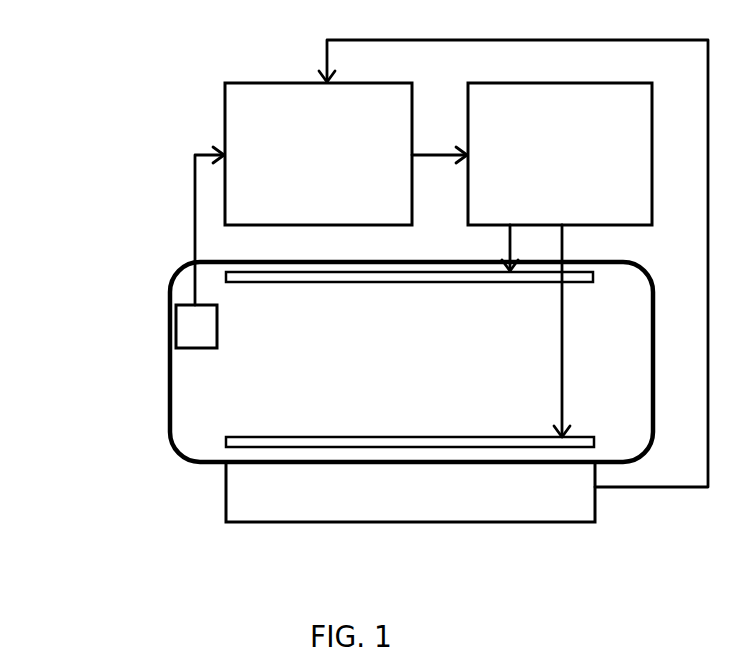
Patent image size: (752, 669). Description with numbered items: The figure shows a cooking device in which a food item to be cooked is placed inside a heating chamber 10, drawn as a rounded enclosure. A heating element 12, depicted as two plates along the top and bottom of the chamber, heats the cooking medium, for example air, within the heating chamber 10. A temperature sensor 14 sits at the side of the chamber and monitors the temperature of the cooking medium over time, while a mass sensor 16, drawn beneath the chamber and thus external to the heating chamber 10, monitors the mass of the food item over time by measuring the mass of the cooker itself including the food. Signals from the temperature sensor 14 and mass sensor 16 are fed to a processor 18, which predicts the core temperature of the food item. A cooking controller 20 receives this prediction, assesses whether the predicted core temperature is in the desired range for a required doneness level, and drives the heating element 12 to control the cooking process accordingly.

The heating chamber 10 is at (227, 382).
The heating element 12 is at (236, 280).
The temperature sensor 14 is at (175, 327).
The mass sensor 16 is at (293, 515).
The processor 18 is at (318, 154).
The cooking controller 20 is at (560, 154).